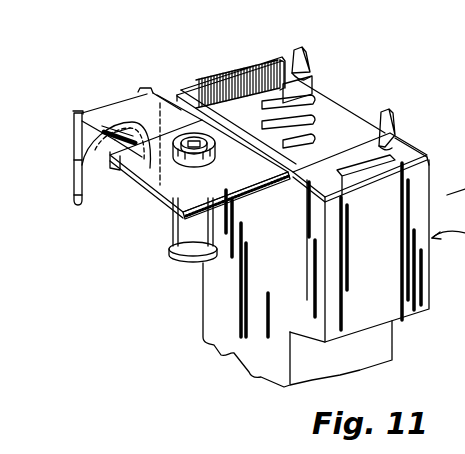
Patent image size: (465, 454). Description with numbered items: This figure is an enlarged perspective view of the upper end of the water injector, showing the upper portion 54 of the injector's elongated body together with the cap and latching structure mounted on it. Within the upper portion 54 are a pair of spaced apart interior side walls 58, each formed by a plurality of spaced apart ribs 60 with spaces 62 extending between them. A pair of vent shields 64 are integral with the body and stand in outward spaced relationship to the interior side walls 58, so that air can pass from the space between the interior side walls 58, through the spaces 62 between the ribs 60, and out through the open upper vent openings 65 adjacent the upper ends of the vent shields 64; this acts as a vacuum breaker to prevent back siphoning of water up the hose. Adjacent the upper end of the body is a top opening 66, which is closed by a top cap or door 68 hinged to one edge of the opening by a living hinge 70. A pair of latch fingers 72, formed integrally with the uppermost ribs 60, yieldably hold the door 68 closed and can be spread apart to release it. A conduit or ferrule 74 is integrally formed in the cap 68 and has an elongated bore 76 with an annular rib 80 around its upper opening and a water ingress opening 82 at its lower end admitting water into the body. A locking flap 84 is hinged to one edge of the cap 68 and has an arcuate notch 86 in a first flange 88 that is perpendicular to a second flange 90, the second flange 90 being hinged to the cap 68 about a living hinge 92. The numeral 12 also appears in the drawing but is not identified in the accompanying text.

The housing 12 is at (193, 292).
The upper portion 54 is at (388, 162).
The interior side walls 58 is at (310, 80).
The ribs 60 is at (316, 116).
The spaces 62 is at (312, 98).
The vent shields 64 is at (256, 70).
The upper vent openings 65 is at (278, 62).
The top opening 66 is at (327, 133).
The top cap or door 68 is at (152, 191).
The living hinge 70 is at (198, 98).
The latch fingers 72 is at (309, 62).
The conduit or ferrule 74 is at (172, 233).
The elongated bore 76 is at (170, 231).
The annular rib 80 is at (181, 259).
The water ingress opening 82 is at (174, 193).
The locking flap 84 is at (65, 205).
The arcuate notch 86 is at (78, 185).
The first flange 88 is at (78, 168).
The second flange 90 is at (145, 92).
The living hinge 92 is at (158, 127).